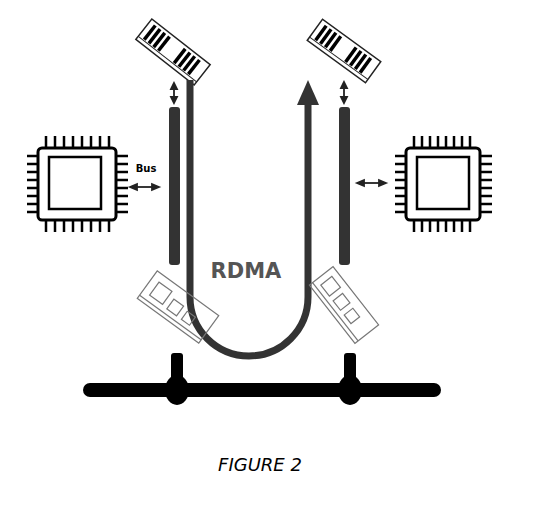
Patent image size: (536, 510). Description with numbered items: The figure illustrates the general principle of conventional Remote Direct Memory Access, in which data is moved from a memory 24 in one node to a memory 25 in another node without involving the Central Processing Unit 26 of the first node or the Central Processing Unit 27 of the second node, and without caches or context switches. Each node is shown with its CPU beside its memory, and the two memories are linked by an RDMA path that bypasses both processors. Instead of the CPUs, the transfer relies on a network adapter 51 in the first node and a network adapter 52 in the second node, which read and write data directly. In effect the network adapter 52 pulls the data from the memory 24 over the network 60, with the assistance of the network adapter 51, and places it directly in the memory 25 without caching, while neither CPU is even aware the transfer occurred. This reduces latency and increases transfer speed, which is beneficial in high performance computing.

The memory 24 is at (152, 44).
The memory 25 is at (321, 45).
The Central Processing Unit 26 is at (77, 184).
The Central Processing Unit 27 is at (443, 184).
The network adapter 51 is at (174, 307).
The network adapter 52 is at (344, 305).
The network 60 is at (246, 379).